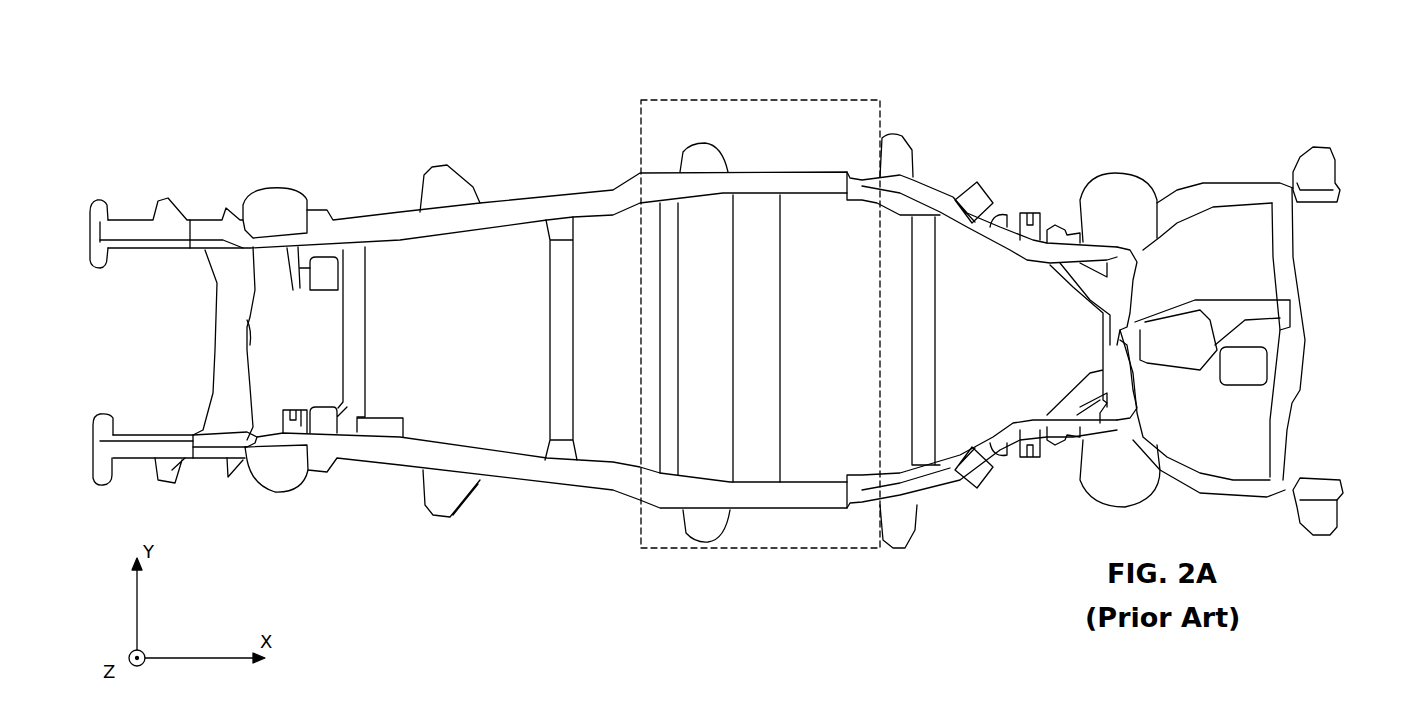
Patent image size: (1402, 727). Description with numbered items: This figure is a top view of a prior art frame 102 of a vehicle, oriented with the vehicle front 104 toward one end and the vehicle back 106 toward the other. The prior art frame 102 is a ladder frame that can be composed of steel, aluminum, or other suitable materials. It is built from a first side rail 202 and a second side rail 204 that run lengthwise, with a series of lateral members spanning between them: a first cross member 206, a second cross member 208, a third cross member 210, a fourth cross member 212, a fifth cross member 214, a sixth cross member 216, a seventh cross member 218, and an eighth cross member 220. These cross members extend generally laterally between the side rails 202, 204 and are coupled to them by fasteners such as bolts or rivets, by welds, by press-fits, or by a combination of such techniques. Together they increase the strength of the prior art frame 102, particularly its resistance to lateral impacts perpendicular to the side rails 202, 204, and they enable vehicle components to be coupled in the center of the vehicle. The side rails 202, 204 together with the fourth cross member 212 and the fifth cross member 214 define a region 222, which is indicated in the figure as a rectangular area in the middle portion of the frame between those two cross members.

The prior art frame 102 is at (1053, 53).
The vehicle front 104 is at (105, 186).
The vehicle back 106 is at (1285, 112).
The first side rail 202 is at (412, 203).
The second side rail 204 is at (503, 453).
The first cross member 206 is at (212, 303).
The second cross member 208 is at (372, 298).
The third cross member 210 is at (550, 370).
The fourth cross member 212 is at (658, 265).
The fifth cross member 214 is at (780, 367).
The sixth cross member 216 is at (912, 290).
The seventh cross member 218 is at (1140, 273).
The eighth cross member 220 is at (1297, 257).
The region 222 is at (779, 99).